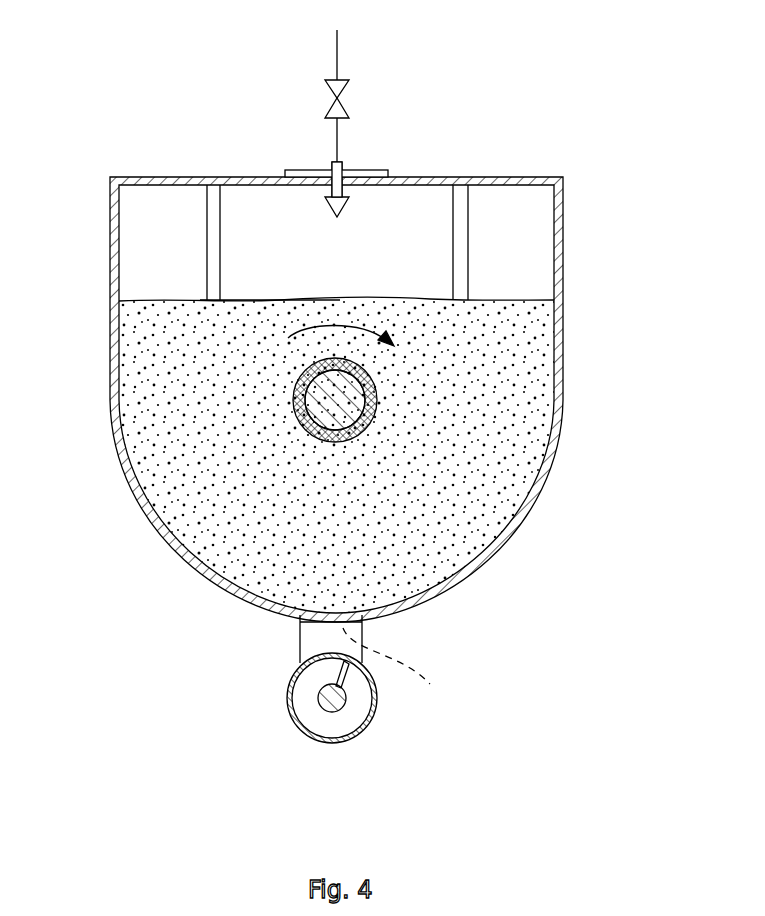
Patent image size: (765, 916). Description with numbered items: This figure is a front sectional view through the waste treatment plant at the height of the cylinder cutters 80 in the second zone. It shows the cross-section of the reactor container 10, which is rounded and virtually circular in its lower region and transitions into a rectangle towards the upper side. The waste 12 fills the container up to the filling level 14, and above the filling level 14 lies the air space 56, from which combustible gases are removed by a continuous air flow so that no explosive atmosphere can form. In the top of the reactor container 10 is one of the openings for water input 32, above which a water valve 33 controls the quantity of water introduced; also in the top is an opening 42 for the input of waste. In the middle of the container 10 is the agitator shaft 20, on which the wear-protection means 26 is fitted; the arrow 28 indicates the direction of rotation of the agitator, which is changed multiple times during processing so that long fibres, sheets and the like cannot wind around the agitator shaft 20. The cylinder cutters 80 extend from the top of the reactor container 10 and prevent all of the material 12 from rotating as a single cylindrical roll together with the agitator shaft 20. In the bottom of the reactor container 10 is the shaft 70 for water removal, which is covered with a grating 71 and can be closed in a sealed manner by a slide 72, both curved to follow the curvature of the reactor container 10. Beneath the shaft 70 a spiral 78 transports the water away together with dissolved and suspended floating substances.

The reactor container 10 is at (572, 277).
The waste 12 is at (527, 393).
The filling level 14 is at (270, 300).
The agitator shaft 20 is at (294, 392).
The wear-protection means 26 is at (316, 396).
The arrow indicating direction of rotation 28 is at (333, 320).
The opening for water input 32 is at (330, 166).
The water valve 33 is at (330, 100).
The opening for the input of waste 42 is at (378, 169).
The air space 56 is at (411, 260).
The shaft for water removal 70 is at (310, 645).
The grating 71 is at (400, 671).
The slide 72 is at (305, 632).
The spiral 78 is at (357, 700).
The cylinder cutters 80 is at (207, 258).